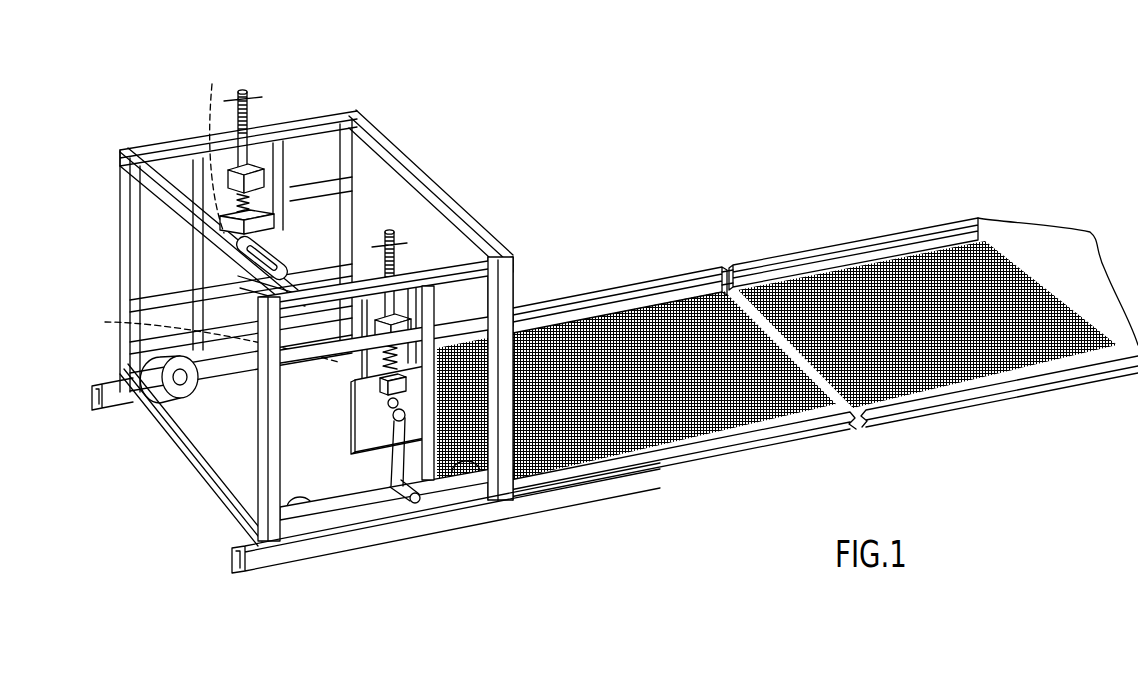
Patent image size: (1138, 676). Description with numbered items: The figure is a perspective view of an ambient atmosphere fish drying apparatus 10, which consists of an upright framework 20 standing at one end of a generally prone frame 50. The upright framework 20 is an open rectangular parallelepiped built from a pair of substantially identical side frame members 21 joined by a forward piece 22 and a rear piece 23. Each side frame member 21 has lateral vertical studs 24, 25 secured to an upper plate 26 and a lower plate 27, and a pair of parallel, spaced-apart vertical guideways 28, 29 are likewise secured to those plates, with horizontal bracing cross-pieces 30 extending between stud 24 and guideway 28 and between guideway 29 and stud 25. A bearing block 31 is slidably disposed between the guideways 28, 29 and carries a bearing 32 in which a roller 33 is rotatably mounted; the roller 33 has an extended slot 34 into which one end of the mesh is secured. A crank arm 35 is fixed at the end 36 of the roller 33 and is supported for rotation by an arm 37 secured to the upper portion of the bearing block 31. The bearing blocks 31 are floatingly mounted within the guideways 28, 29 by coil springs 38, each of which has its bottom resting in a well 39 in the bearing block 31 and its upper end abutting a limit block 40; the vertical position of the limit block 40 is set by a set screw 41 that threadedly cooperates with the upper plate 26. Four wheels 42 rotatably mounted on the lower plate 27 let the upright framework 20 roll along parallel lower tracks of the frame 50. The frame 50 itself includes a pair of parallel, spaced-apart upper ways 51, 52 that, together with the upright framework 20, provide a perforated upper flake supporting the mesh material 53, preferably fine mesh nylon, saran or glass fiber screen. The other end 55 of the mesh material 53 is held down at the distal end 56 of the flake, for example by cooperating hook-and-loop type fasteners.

The fish drying apparatus 10 is at (627, 183).
The upright framework 20 is at (364, 327).
The side frame members 21 is at (114, 214).
The forward piece 22 is at (434, 190).
The rear piece 23 is at (178, 222).
The vertical stud 24 is at (262, 402).
The vertical stud 25 is at (501, 455).
The upper plate 26 is at (472, 275).
The lower plate 27 is at (318, 520).
The vertical guideway 28 is at (350, 365).
The vertical guideway 29 is at (432, 300).
The horizontal bracing cross-pieces 30 is at (508, 283).
The bearing block 31 is at (214, 150).
The bearing 32 is at (386, 413).
The roller 33 is at (276, 255).
The extended slot 34 is at (282, 275).
The crank arm 35 is at (427, 478).
The end of the roller 36 is at (390, 400).
The arm 37 is at (397, 394).
The coil spring 38 is at (258, 195).
The well 39 is at (208, 215).
The limit block 40 is at (263, 172).
The set screw 41 is at (253, 96).
The wheels 42 is at (170, 375).
The frame 50 is at (787, 371).
The upper way 51 is at (668, 285).
The upper way 52 is at (670, 470).
The mesh material 53 is at (742, 300).
The other end of mesh material 55 is at (1040, 269).
The distal end of the flake 56 is at (1058, 281).